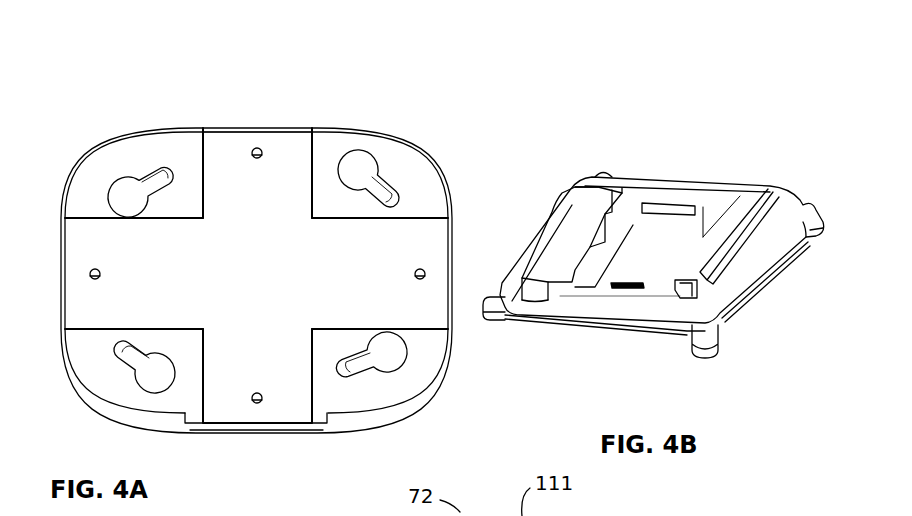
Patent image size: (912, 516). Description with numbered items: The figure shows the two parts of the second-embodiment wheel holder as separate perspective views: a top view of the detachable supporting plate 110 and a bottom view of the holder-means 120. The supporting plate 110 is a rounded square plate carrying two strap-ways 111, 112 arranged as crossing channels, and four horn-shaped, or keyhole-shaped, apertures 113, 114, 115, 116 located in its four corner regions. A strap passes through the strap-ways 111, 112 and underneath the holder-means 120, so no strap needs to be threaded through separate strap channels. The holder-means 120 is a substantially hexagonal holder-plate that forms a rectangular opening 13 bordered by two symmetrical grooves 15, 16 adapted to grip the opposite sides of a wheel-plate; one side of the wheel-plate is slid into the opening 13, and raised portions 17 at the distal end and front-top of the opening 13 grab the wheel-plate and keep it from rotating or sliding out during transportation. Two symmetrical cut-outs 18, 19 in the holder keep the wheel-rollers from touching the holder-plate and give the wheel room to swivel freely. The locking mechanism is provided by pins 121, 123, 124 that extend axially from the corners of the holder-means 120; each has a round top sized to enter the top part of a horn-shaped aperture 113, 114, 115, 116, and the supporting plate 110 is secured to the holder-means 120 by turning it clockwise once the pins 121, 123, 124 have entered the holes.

In FIG. 4A, the supporting plate 110 is at (332, 84).
In FIG. 4A, the strap-way 111 is at (236, 150).
In FIG. 4A, the strap-way 112 is at (428, 248).
In FIG. 4A, the horn-shaped aperture 113 is at (122, 187).
In FIG. 4A, the horn-shaped aperture 114 is at (367, 180).
In FIG. 4A, the horn-shaped aperture 115 is at (367, 365).
In FIG. 4A, the horn-shaped aperture 116 is at (140, 368).
In FIG. 4B, the holder-means 120 is at (684, 150).
In FIG. 4B, the opening 13 is at (590, 314).
In FIG. 4B, the groove 15 is at (556, 297).
In FIG. 4B, the groove 16 is at (680, 295).
In FIG. 4B, the raised portion 17 is at (626, 290).
In FIG. 4B, the cut-out 18 is at (588, 240).
In FIG. 4B, the cut-out 19 is at (705, 240).
In FIG. 4B, the pin 121 is at (494, 312).
In FIG. 4B, the pin 123 is at (815, 232).
In FIG. 4B, the pin 124 is at (705, 350).